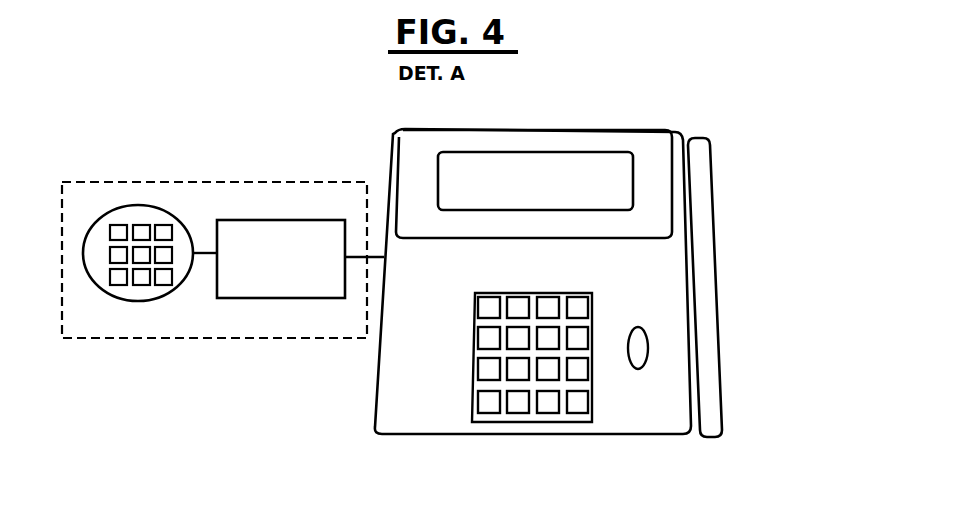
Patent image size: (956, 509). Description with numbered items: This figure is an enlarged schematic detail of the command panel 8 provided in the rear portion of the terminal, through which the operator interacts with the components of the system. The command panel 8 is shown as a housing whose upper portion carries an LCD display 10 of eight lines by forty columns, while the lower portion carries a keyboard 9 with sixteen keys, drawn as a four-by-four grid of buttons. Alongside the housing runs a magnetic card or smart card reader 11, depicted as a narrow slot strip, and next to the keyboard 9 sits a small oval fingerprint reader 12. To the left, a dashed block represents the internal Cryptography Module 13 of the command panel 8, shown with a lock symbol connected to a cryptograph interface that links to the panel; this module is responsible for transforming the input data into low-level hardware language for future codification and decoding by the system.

The command panel 8 is at (578, 128).
The keyboard 9 is at (634, 370).
The LCD display 10 is at (607, 183).
The magnetic card or smart card reader 11 is at (690, 265).
The fingerprint reader 12 is at (643, 348).
The Cryptography Module 13 is at (243, 322).